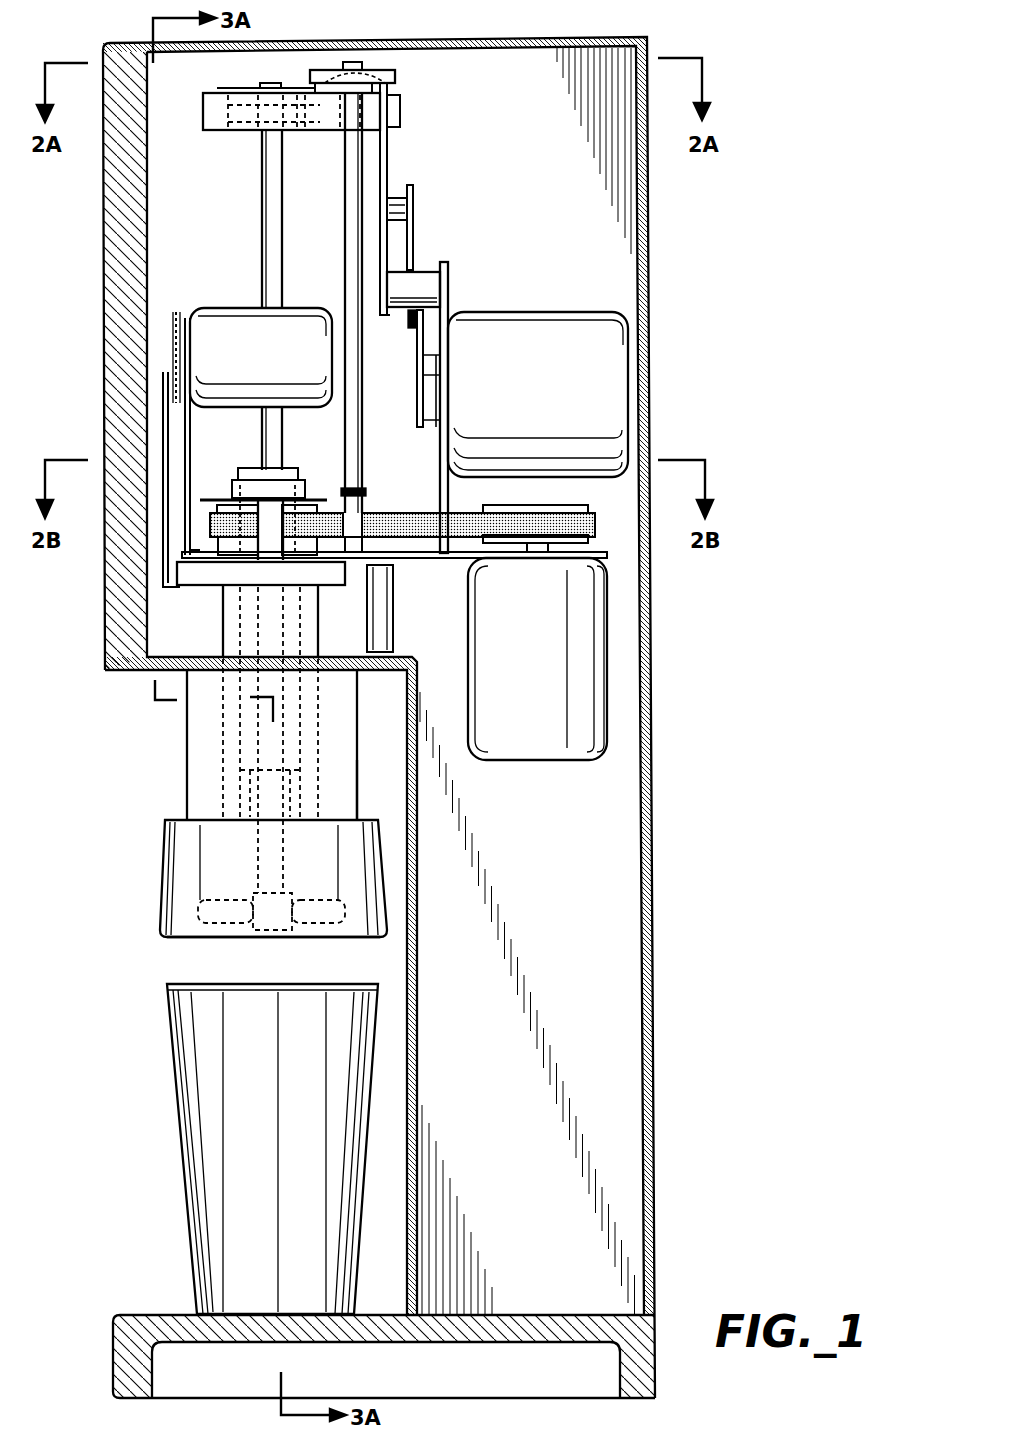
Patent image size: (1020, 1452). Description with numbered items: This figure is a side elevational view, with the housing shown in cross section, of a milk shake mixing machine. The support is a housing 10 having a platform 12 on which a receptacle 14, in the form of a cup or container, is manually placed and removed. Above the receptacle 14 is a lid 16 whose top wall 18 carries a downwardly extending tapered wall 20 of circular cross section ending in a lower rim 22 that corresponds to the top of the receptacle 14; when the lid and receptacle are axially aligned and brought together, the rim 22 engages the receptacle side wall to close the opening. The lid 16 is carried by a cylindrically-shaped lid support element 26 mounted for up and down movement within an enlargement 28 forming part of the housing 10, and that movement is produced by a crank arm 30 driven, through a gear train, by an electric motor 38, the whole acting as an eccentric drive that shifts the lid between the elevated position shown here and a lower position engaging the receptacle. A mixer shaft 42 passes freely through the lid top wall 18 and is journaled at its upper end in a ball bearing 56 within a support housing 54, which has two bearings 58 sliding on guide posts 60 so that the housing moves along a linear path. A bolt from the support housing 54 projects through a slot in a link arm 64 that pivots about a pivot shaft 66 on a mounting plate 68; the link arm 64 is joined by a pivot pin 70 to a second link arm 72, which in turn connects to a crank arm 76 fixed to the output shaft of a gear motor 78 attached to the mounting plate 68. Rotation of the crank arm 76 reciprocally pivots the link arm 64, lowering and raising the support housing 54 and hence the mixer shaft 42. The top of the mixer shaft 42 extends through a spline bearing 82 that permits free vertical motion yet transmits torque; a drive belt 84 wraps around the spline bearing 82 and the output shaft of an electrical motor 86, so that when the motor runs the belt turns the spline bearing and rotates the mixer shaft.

The housing 10 is at (720, 1022).
The platform 12 is at (152, 1315).
The receptacle 14 is at (205, 1062).
The lid 16 is at (185, 912).
The top wall 18 is at (358, 812).
The tapered wall 20 is at (180, 872).
The lower rim 22 is at (188, 937).
The lid support element 26 is at (222, 630).
The enlargement 28 is at (185, 782).
The crank arm 30 is at (160, 535).
The electric motor 38 is at (220, 318).
The mixer shaft 42 is at (262, 250).
The support housing 54 is at (206, 118).
The ball bearing 56 is at (297, 130).
The bearings 58 is at (400, 88).
The guide posts 60 is at (352, 492).
The link arm 64 is at (388, 163).
The pivot shaft 66 is at (418, 268).
The mounting plate 68 is at (450, 288).
The pivot pin 70 is at (407, 206).
The second link arm 72 is at (417, 318).
The crank arm 76 is at (428, 356).
The gear motor 78 is at (557, 332).
The spline bearing 82 is at (222, 495).
The drive belt 84 is at (595, 520).
The electrical motor 86 is at (530, 758).